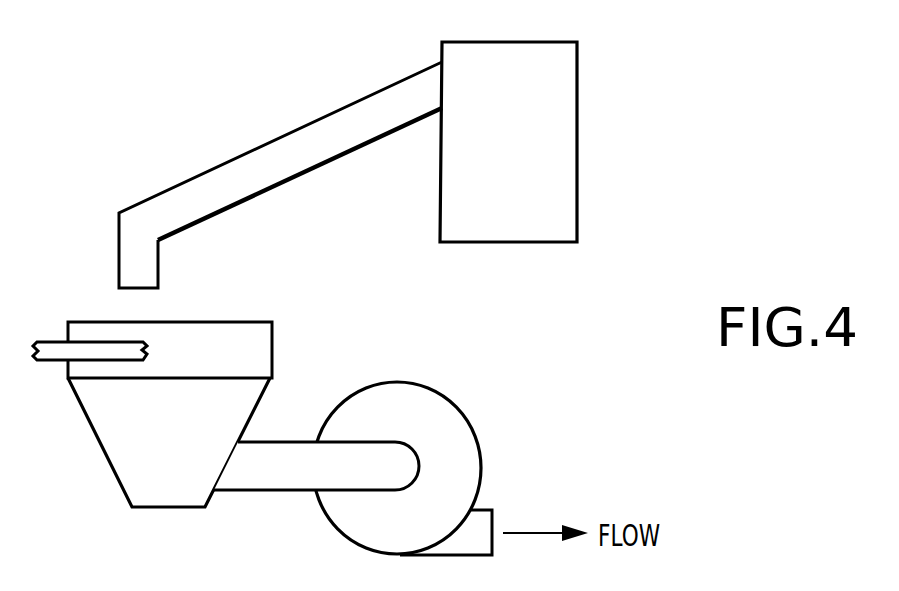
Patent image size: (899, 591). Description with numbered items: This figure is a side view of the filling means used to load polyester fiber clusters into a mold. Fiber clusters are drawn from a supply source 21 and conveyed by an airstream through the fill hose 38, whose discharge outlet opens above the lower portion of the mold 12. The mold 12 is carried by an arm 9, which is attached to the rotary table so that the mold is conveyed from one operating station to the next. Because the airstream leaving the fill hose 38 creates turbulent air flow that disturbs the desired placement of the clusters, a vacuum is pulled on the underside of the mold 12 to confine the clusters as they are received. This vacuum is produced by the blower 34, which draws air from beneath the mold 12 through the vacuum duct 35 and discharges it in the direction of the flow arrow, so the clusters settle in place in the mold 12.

The arm 9 is at (50, 343).
The mold 12 is at (272, 358).
The supply source 21 is at (560, 117).
The blower 34 is at (448, 422).
The vacuum duct 35 is at (120, 440).
The fill hose 38 is at (277, 140).